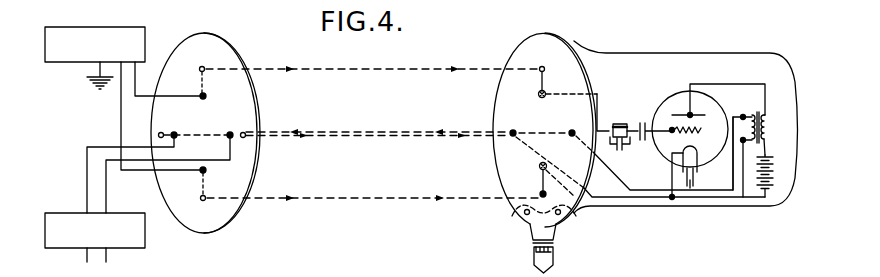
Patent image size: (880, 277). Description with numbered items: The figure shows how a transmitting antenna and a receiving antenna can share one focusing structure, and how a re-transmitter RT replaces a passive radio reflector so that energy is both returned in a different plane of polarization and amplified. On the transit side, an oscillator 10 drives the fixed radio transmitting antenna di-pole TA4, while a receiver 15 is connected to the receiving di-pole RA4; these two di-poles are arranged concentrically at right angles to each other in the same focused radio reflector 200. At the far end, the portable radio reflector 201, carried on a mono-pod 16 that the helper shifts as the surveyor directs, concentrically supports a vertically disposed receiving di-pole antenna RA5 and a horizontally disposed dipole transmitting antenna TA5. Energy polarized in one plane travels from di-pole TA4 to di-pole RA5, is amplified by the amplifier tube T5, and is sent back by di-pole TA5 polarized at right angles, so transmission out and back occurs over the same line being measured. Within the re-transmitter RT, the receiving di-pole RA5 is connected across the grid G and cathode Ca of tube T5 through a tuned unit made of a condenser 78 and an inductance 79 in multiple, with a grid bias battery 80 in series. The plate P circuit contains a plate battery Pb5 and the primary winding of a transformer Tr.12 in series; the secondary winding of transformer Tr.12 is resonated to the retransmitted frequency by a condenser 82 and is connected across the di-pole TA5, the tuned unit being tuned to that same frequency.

The oscillator 10 is at (63, 63).
The receiver 15 is at (126, 208).
The focused radio reflector 200 is at (237, 52).
The fixed radio transmitting antenna di-pole TA4 is at (204, 66).
The receiving di-pole RA4 is at (170, 127).
The portable radio reflector 201 is at (581, 74).
The receiving di-pole antenna RA5 is at (545, 62).
The dipole transmitting antenna TA5 is at (508, 132).
The mono-pod 16 is at (553, 249).
The re-transmitter RT is at (641, 56).
The inductance 79 is at (617, 123).
The condenser 78 is at (621, 146).
The grid bias battery 80 is at (640, 122).
The amplifier tube T5 is at (674, 96).
The plate P is at (684, 113).
The grid G is at (707, 124).
The cathode Ca is at (684, 152).
The transformer Tr.12 is at (751, 126).
The condenser 82 is at (732, 137).
The plate battery Pb5 is at (772, 168).